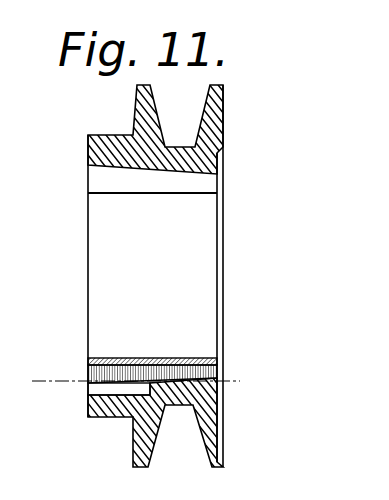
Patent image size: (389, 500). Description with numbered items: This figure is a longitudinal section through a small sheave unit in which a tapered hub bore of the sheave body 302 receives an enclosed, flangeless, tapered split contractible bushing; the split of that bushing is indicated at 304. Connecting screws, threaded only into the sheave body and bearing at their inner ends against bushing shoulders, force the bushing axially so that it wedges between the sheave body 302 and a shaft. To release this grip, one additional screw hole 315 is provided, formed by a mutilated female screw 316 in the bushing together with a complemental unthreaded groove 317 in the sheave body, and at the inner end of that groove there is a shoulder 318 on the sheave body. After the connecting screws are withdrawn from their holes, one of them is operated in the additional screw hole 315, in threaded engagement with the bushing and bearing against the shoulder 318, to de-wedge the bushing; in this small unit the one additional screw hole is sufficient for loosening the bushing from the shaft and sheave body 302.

The sheave body 302 is at (106, 134).
The split of the bushing 304 is at (182, 186).
The additional screw hole 315 is at (92, 373).
The mutilated female screw 316 is at (132, 360).
The unthreaded groove 317 is at (99, 393).
The shoulder 318 is at (152, 385).